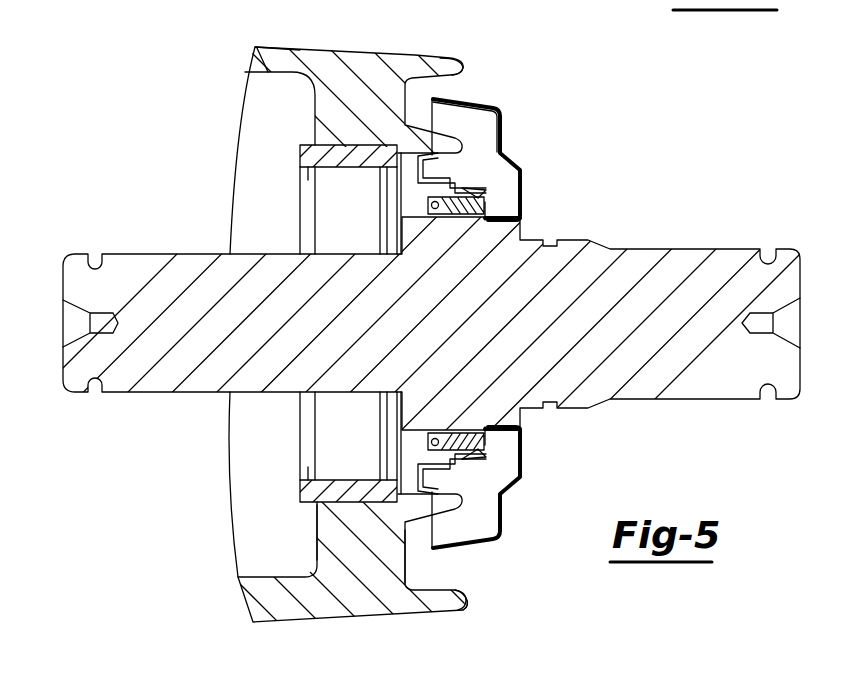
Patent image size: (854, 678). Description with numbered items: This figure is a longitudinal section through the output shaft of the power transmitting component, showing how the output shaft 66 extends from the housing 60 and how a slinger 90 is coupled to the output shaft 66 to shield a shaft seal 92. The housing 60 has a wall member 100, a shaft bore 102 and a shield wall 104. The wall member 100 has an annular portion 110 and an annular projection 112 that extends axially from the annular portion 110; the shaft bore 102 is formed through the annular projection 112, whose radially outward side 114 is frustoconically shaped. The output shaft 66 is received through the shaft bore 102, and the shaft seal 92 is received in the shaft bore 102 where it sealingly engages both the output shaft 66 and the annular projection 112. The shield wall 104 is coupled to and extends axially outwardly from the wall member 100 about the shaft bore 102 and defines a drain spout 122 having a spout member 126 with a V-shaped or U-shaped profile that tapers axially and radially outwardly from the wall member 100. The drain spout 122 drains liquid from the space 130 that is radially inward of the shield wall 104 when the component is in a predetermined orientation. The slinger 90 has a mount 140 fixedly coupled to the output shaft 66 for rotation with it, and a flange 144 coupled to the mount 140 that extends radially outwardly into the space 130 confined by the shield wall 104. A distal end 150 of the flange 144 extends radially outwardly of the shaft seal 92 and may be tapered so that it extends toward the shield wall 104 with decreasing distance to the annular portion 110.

The housing 60 is at (277, 53).
The output shaft 66 is at (715, 253).
The slinger 90 is at (523, 178).
The shaft seal 92 is at (462, 192).
The wall member 100 is at (365, 60).
The shaft bore 102 is at (423, 515).
The shield wall 104 is at (463, 64).
The annular portion 110 is at (338, 113).
The annular projection 112 is at (520, 498).
The radially outward side 114 is at (535, 497).
The drain spout 122 is at (543, 0).
The spout member 126 is at (466, 603).
The space 130 is at (437, 83).
The mount 140 is at (502, 228).
The flange 144 is at (520, 460).
The distal end 150 is at (470, 97).